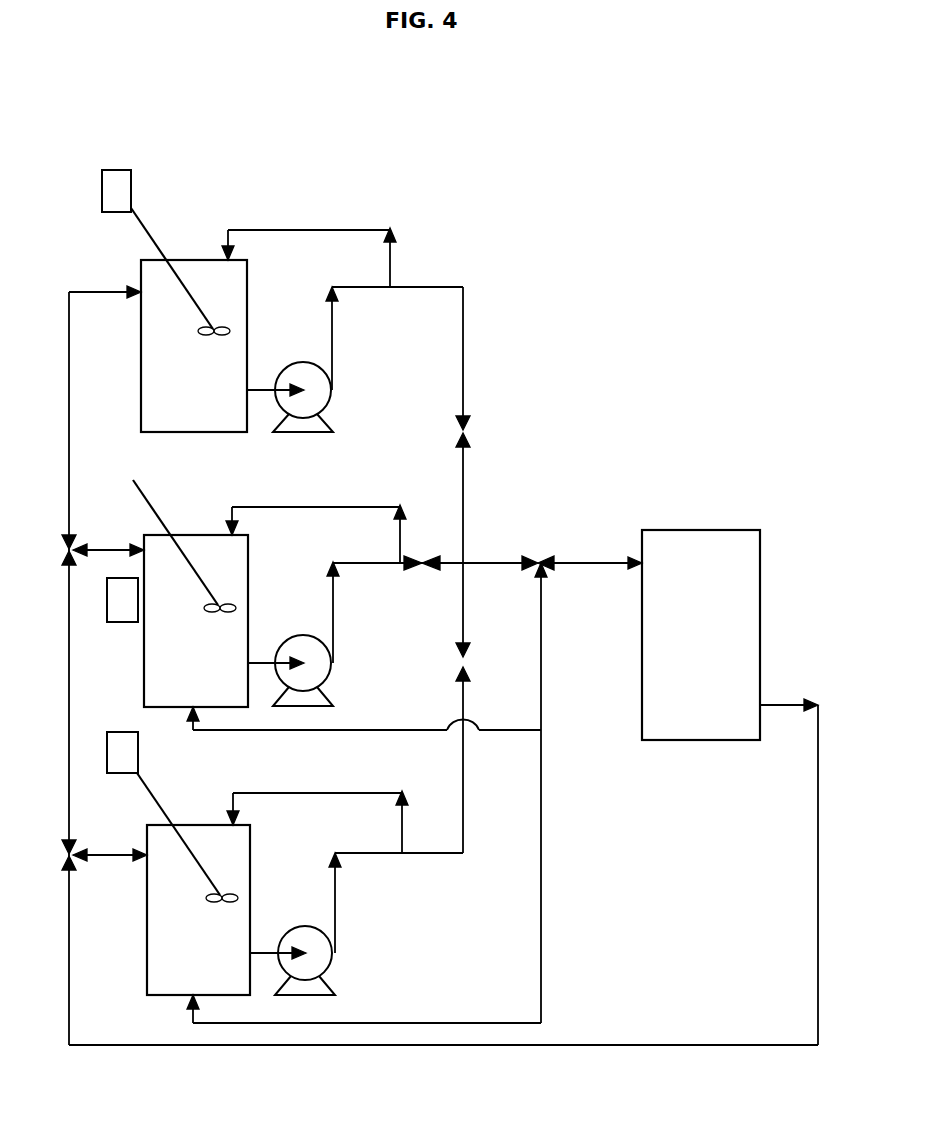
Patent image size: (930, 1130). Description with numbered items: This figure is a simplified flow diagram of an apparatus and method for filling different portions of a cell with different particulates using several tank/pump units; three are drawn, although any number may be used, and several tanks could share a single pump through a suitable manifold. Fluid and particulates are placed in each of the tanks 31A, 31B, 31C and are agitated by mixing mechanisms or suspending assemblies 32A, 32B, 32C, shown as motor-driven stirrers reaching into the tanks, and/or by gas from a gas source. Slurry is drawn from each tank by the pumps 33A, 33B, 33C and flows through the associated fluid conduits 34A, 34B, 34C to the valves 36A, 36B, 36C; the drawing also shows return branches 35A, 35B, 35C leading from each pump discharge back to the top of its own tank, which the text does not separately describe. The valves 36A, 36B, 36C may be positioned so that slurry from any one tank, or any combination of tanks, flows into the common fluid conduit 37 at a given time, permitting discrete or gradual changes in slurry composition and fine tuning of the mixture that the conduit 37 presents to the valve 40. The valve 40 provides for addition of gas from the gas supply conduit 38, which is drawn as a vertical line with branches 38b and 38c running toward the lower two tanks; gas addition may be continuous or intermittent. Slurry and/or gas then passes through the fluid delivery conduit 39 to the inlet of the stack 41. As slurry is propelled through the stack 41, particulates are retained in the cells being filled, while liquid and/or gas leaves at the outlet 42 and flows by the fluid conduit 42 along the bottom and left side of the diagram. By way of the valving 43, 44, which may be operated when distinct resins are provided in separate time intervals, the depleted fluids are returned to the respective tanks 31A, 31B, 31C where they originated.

The tank 31A is at (157, 360).
The tank 31B is at (162, 633).
The tank 31C is at (165, 923).
The mixing mechanism or suspending assembly 32A is at (138, 230).
The mixing mechanism or suspending assembly 32B is at (143, 498).
The mixing mechanism or suspending assembly 32C is at (145, 792).
The pump 33A is at (315, 397).
The pump 33B is at (316, 670).
The pump 33C is at (318, 975).
The fluid conduit 34A is at (437, 288).
The fluid conduit 34B is at (397, 565).
The fluid conduit 34C is at (440, 855).
The first recirculation line 35A is at (396, 248).
The second recirculation line 35B is at (404, 510).
The third recirculation line 35C is at (406, 797).
The valve 36A is at (470, 423).
The valve 36B is at (437, 567).
The valve 36C is at (470, 662).
The fluid conduit 37 is at (522, 566).
The gas supply conduit 38 is at (540, 613).
The return branch line to second tank 38b is at (343, 733).
The return branch line to third tank 38c is at (423, 1020).
The fluid delivery conduit 39 is at (595, 564).
The valve 40 is at (547, 557).
The stack 41 is at (652, 710).
The outlet and fluid conduit 42 is at (815, 765).
The valving 43 is at (68, 857).
The valving 44 is at (68, 555).